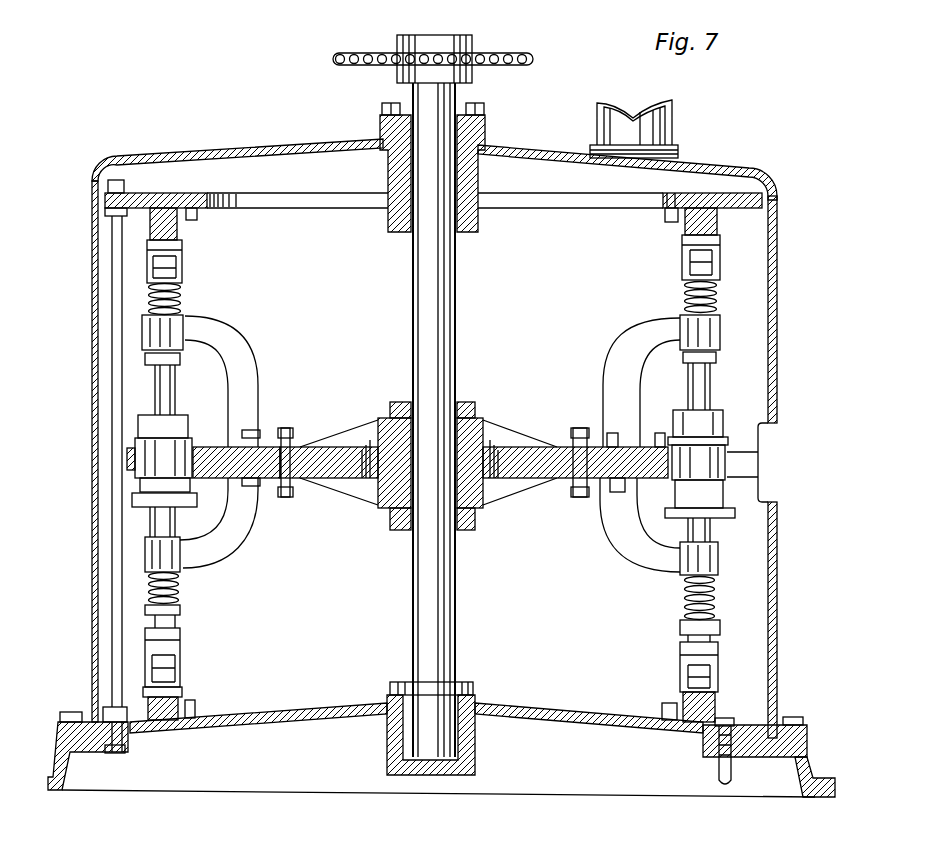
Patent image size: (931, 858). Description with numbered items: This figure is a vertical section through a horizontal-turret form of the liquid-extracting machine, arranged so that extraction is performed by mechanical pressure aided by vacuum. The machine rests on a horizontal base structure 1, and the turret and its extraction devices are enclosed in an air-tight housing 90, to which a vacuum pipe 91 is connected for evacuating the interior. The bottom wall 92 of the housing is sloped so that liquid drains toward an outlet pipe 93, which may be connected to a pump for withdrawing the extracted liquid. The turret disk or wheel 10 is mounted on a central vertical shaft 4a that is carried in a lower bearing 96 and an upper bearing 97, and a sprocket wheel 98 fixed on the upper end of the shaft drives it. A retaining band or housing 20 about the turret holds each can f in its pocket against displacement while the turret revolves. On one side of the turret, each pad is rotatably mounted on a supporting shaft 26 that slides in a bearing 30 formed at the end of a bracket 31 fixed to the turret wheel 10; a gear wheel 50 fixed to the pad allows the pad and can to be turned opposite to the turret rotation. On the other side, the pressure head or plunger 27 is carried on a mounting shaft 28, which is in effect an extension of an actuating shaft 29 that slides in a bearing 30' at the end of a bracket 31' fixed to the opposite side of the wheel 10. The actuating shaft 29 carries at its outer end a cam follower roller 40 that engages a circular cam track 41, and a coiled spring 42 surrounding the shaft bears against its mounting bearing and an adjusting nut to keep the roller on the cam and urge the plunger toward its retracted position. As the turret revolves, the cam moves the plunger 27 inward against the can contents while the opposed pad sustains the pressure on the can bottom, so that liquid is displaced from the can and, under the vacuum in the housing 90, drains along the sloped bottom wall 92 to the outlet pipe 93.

The horizontal base structure 1 is at (250, 770).
The central vertical shaft 4a is at (413, 330).
The turret disk or wheel 10 is at (530, 462).
The retaining band or housing 20 is at (127, 462).
The supporting shaft 26 is at (185, 568).
The pressure head or plunger 27 is at (685, 420).
The mounting shaft 28 is at (698, 382).
The actuating shaft 29 is at (683, 293).
The bearing 30 is at (678, 579).
The bearing 30' is at (752, 339).
The bracket 31 is at (639, 540).
The bracket 31' is at (631, 378).
The cam follower roller 40 is at (182, 262).
The circular cam track 41 is at (177, 230).
The coiled spring 42 is at (182, 298).
The gear wheel 50 is at (197, 500).
The air-tight housing 90 is at (778, 205).
The vacuum pipe 91 is at (678, 126).
The bottom wall 92 is at (580, 720).
The outlet pipe 93 is at (717, 783).
The bearing 96 is at (476, 745).
The bearing 97 is at (390, 230).
The sprocket wheel 98 is at (375, 60).
The can f is at (183, 436).